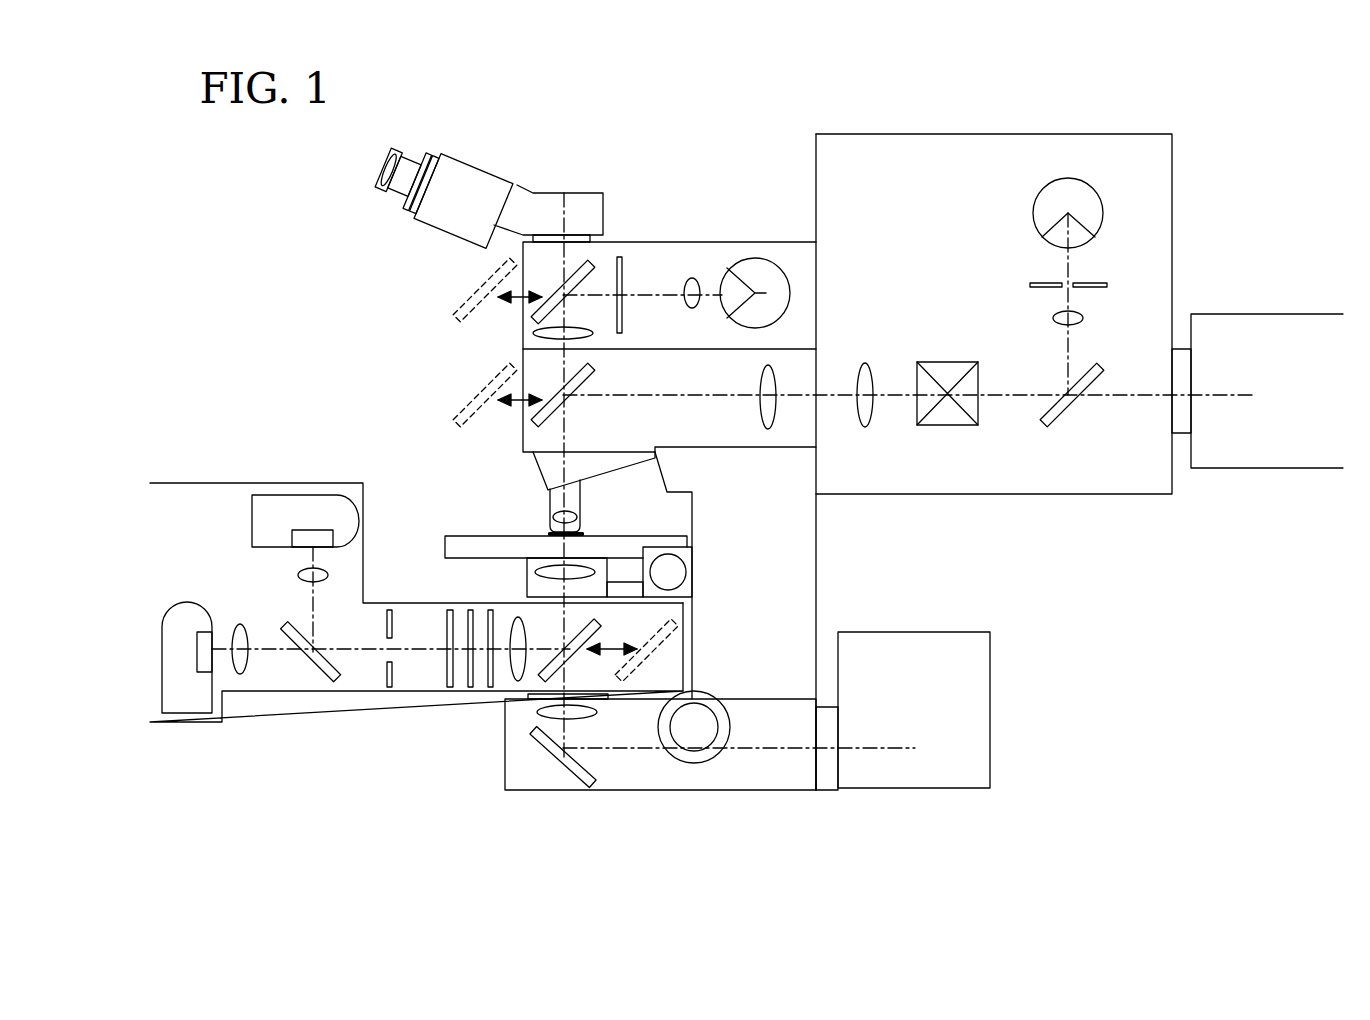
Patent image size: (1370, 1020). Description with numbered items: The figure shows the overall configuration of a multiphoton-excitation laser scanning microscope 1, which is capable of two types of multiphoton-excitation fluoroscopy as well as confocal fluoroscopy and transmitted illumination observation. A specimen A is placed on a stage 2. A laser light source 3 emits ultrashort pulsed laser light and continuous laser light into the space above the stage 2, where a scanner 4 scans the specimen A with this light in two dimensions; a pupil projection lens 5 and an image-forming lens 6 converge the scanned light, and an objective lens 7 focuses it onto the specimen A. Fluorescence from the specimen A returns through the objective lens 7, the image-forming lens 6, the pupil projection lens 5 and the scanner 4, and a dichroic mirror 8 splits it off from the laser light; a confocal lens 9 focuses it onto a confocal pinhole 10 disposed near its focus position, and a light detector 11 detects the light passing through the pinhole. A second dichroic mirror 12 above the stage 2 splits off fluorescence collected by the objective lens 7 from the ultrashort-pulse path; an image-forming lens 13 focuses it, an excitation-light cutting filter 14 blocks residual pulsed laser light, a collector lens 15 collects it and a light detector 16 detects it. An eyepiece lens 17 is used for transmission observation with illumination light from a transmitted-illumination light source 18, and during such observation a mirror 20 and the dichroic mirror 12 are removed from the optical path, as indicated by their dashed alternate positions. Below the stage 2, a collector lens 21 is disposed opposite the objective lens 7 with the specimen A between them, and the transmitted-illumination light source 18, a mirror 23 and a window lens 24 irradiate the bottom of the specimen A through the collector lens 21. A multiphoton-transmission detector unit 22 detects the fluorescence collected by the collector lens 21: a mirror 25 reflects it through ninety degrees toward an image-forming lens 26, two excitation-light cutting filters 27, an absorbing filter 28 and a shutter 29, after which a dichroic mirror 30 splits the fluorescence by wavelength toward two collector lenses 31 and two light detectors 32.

The multiphoton-excitation laser scanning microscope 1 is at (1090, 92).
The stage 2 is at (457, 536).
The laser light source 3 is at (1246, 314).
The scanner 4 is at (950, 362).
The pupil projection lens 5 is at (865, 362).
The image-forming lens 6 is at (768, 430).
The objective lens 7 is at (580, 517).
The dichroic mirror 8 is at (1075, 408).
The confocal lens 9 is at (1084, 318).
The confocal pinhole 10 is at (1100, 283).
The light detector 11 is at (1101, 205).
The dichroic mirror 12 is at (474, 394).
The image-forming lens 13 is at (534, 333).
The excitation-light cutting filter 14 is at (620, 257).
The collector lens 15 is at (691, 278).
The light detector 16 is at (755, 258).
The eyepiece lens 17 is at (391, 160).
The transmitted-illumination light source 18 is at (920, 632).
The mirror 20 is at (578, 262).
The collector lens 21 is at (540, 568).
The multiphoton-transmission detector unit 22 is at (188, 483).
The mirror 23 is at (560, 770).
The window lens 24 is at (535, 713).
The mirror 25 is at (600, 622).
The image-forming lens 26 is at (511, 680).
The excitation-light cutting filters 27 is at (446, 620).
The absorbing filter 28 is at (469, 625).
The shutter 29 is at (385, 678).
The dichroic mirror 30 is at (318, 672).
The collector lenses 31 is at (298, 575).
The light detectors 32 is at (310, 505).
The specimen A is at (548, 534).